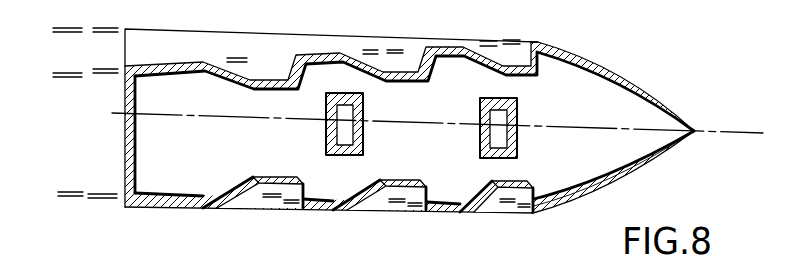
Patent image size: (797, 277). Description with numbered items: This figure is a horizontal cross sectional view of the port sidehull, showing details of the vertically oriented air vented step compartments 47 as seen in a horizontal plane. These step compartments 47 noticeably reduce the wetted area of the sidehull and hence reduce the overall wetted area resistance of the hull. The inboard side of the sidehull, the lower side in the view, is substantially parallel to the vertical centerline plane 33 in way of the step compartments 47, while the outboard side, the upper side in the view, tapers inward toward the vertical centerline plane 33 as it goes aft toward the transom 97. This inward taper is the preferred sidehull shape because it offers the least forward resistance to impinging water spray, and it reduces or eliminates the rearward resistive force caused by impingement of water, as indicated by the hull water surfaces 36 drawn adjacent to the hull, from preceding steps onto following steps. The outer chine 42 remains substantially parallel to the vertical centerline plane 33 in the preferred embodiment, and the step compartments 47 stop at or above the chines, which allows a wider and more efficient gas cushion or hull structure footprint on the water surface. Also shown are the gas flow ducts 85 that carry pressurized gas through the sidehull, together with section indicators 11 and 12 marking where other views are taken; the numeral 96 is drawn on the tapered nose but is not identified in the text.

The section line for FIG. 11 is at (352, 11).
The section line for FIG. 12 is at (558, 9).
The vertical centerline plane 33 is at (548, 125).
The hull water surfaces 36 is at (72, 72).
The outer chine 42 is at (203, 29).
The vertically oriented air vented step compartments 47 is at (257, 78).
The gas flow ducts 85 is at (495, 113).
The nose wall 96 is at (645, 88).
The transom 97 is at (125, 87).